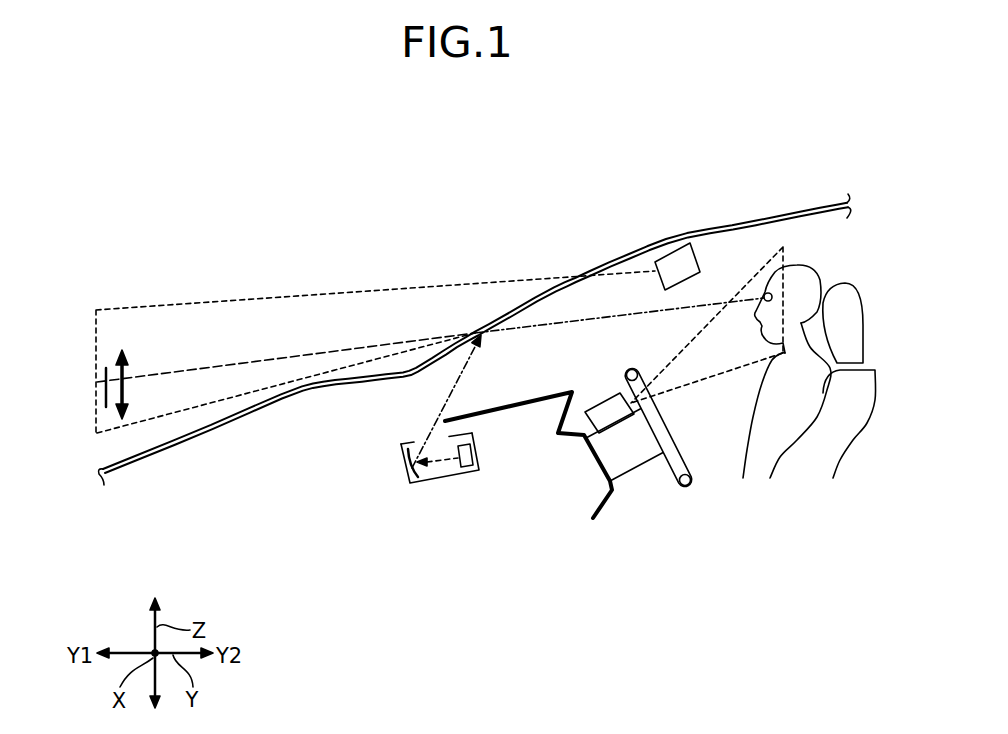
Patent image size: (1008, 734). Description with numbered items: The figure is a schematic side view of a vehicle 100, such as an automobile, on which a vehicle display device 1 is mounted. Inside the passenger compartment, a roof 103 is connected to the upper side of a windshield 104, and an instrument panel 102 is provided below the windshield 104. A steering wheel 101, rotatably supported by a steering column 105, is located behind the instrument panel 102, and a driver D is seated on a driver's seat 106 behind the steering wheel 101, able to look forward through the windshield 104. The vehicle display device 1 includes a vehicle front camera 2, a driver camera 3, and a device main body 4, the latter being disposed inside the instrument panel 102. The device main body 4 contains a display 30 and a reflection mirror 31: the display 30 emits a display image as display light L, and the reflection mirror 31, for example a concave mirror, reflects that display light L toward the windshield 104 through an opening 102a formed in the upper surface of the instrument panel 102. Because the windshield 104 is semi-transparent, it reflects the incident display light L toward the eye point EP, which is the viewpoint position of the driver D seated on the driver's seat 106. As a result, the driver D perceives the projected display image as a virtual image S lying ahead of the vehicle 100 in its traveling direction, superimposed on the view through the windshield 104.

The vehicle display device 1 is at (625, 152).
The vehicle front camera 2 is at (680, 258).
The driver camera 3 is at (597, 403).
The device main body 4 is at (427, 402).
The display 30 is at (465, 463).
The reflection mirror 31 is at (411, 478).
The vehicle 100 is at (250, 197).
The steering wheel 101 is at (668, 455).
The instrument panel 102 is at (503, 402).
The opening 102a is at (417, 423).
The roof 103 is at (705, 235).
The windshield 104 is at (540, 290).
The steering column 105 is at (625, 450).
The driver's seat 106 is at (853, 440).
The virtual image S is at (107, 393).
The display light L is at (447, 459).
The eye point EP is at (765, 293).
The driver D is at (797, 264).